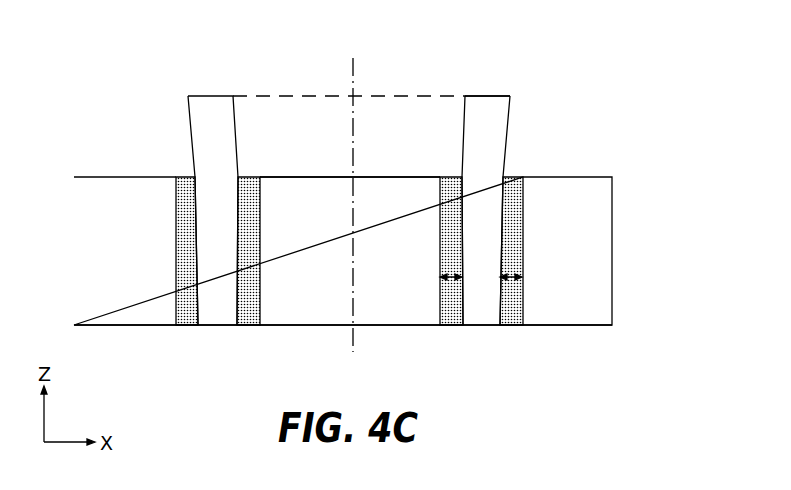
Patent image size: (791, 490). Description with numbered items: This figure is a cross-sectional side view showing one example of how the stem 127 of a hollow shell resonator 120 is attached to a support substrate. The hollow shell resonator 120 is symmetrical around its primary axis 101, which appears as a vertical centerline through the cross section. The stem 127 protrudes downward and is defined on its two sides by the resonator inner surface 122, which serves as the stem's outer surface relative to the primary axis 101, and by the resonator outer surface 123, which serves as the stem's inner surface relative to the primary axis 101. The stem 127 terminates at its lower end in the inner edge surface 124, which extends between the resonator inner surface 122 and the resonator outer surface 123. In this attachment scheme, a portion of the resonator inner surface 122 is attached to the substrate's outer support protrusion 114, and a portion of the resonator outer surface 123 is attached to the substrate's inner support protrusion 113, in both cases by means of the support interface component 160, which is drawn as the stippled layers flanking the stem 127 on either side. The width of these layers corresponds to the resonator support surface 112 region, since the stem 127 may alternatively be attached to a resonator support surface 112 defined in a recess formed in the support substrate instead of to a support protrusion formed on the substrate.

The primary axis 101 is at (350, 83).
The resonator support surface 112 is at (462, 283).
The inner support protrusion 113 is at (300, 193).
The outer support protrusion 114 is at (590, 210).
The hollow shell resonator 120 is at (487, 169).
The resonator inner surface 122 is at (514, 126).
The resonator outer surface 123 is at (460, 137).
The inner edge surface 124 is at (485, 332).
The stem 127 is at (483, 110).
The support interface component 160 is at (515, 213).